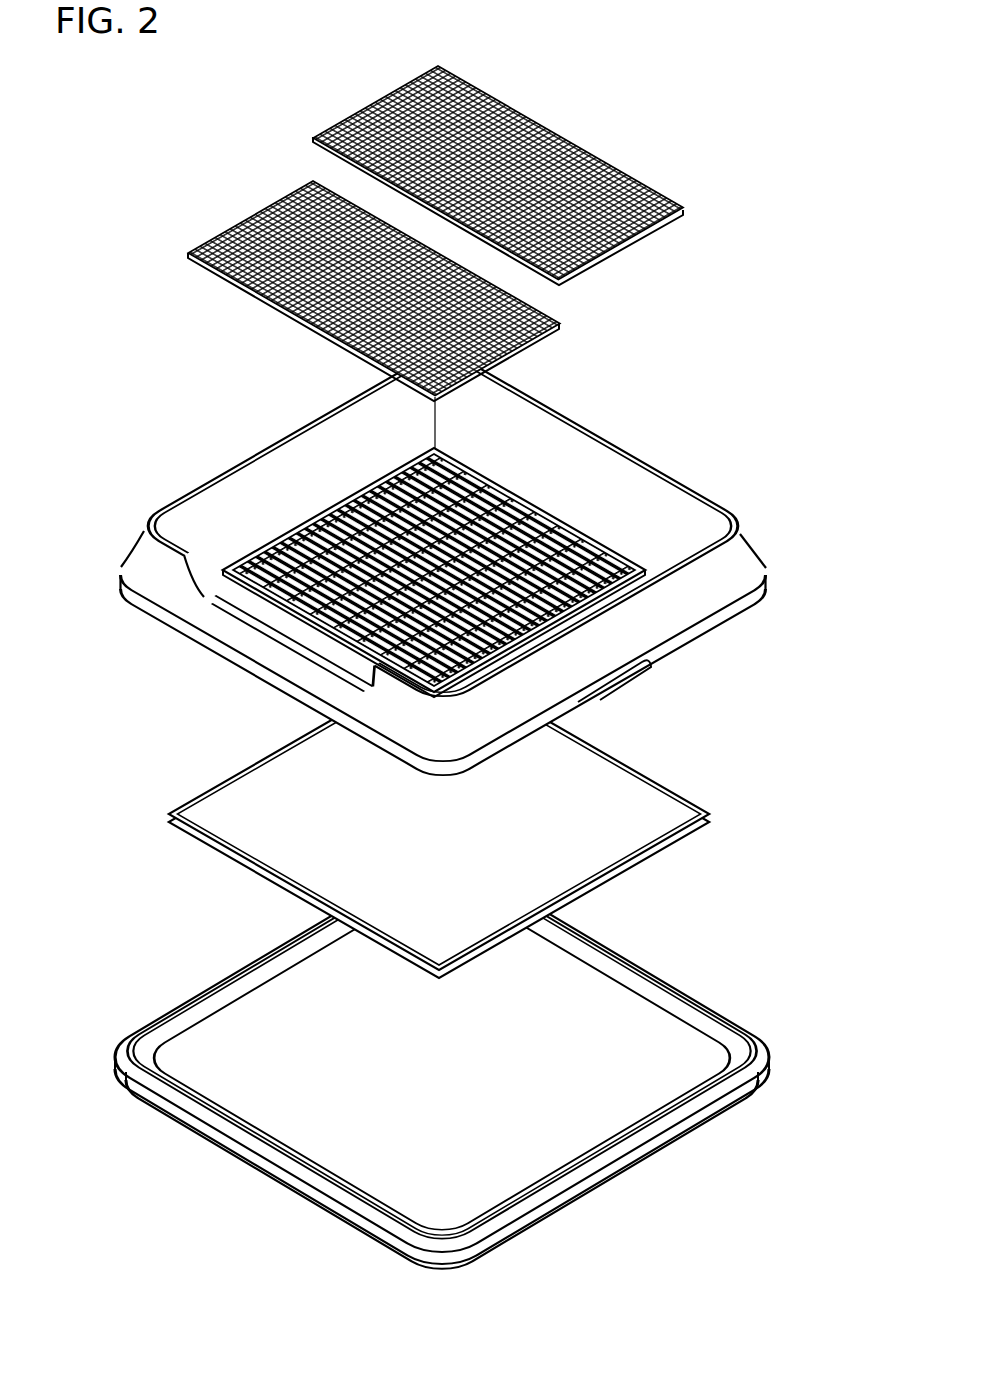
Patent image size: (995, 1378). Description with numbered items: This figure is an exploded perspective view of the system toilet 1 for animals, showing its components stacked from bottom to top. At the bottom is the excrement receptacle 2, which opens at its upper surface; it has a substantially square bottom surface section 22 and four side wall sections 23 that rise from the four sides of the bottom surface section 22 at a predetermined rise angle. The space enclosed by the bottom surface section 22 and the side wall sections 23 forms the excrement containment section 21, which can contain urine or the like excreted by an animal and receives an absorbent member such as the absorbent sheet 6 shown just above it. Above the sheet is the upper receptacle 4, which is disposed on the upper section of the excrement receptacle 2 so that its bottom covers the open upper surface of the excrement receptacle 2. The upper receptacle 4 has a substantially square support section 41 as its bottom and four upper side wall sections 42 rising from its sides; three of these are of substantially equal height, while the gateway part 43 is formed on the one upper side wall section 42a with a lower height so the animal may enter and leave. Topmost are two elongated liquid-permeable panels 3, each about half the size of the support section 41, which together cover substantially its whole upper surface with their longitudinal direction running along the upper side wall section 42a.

The system toilet for animals 1 is at (606, 70).
The excrement receptacle 2 is at (442, 1064).
The liquid-permeable panel 3 is at (598, 173).
The upper receptacle 4 is at (423, 565).
The absorbent sheet 6 is at (640, 798).
The excrement containment section 21 is at (256, 1107).
The bottom surface section 22 is at (436, 1068).
The side wall sections 23 is at (342, 1197).
The support section 41 is at (563, 543).
The upper side wall sections 42 is at (658, 527).
The upper side wall section forming the gateway part 42a is at (152, 577).
The gateway part 43 is at (277, 633).